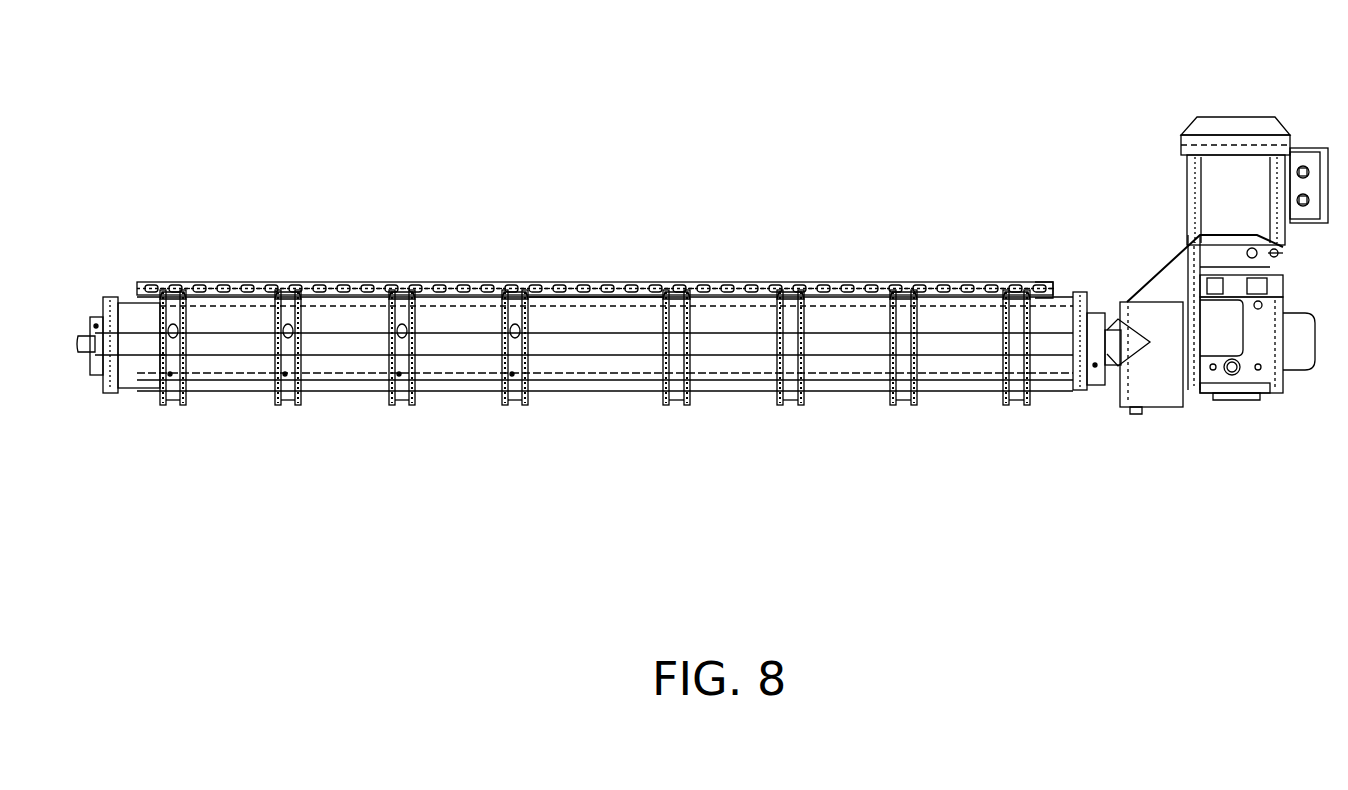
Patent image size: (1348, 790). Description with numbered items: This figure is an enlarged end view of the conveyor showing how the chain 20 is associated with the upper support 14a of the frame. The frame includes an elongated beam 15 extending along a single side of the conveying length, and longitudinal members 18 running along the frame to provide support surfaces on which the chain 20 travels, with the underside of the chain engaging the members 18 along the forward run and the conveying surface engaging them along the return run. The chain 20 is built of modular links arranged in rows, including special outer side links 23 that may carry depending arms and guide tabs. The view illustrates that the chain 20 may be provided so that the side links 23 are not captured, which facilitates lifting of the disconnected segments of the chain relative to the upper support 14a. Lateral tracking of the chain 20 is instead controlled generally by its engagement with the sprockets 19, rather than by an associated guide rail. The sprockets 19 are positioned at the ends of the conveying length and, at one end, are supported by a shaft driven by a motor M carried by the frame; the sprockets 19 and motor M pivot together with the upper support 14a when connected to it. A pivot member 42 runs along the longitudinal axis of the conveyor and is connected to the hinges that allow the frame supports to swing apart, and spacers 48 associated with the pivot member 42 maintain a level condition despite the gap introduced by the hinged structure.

The upper support 14a is at (475, 443).
The elongated beam 15 is at (1118, 355).
The longitudinal member 18 is at (178, 283).
The sprocket 19 is at (660, 400).
The chain 20 is at (637, 282).
The outer side link 23 is at (1050, 282).
The pivot member 42 is at (1165, 270).
The spacer 48 is at (1140, 414).
The motor M is at (1228, 117).